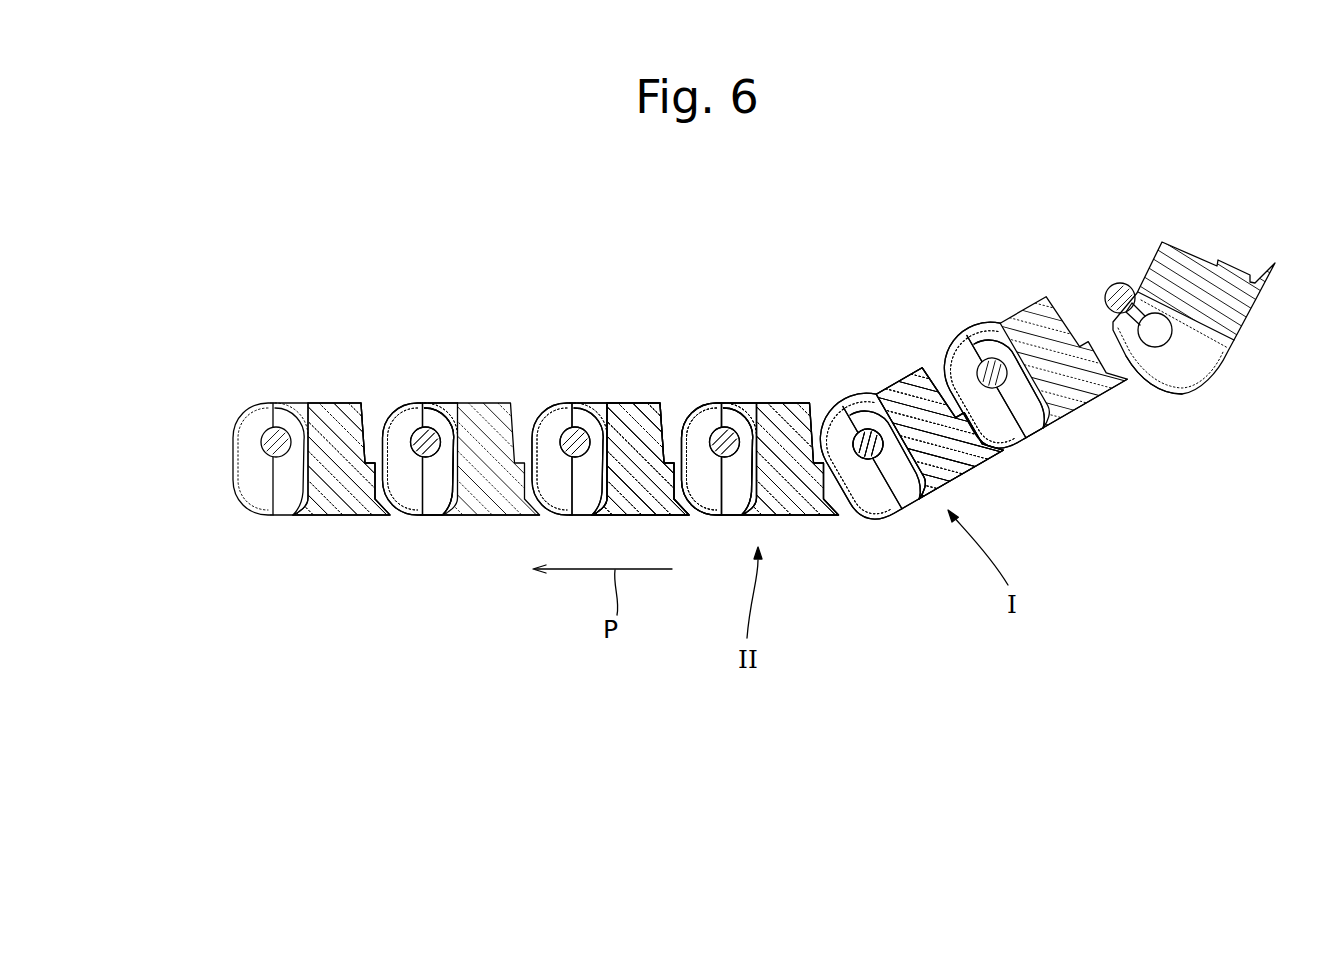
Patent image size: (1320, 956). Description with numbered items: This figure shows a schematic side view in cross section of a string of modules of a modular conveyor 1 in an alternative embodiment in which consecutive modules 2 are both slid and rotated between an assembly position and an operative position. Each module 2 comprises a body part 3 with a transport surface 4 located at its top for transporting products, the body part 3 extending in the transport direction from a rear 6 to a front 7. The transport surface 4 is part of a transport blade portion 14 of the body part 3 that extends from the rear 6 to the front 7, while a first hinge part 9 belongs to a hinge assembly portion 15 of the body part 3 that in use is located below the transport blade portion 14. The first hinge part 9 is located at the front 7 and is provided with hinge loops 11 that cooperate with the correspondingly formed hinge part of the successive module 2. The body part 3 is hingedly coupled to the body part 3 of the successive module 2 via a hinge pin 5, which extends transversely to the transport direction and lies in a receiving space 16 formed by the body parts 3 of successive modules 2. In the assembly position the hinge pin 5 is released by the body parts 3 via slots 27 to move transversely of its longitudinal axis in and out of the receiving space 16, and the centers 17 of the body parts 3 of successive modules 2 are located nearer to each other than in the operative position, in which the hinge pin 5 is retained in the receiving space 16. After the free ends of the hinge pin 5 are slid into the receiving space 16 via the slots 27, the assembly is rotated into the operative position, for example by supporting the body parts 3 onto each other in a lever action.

The modular conveyor 1 is at (203, 516).
The module 2 is at (639, 358).
The body part 3 is at (622, 402).
The transport surface 4 is at (487, 517).
The hinge pin 5 is at (432, 438).
The rear 6 is at (1235, 242).
The front 7 is at (1154, 425).
The first hinge part 9 is at (420, 422).
The hinge loop 11 is at (405, 412).
The transport blade portion 14 is at (378, 420).
The hinge assembly portion 15 is at (340, 410).
The receiving space 16 is at (443, 427).
The centers 17 is at (633, 462).
The slot 27 is at (742, 408).